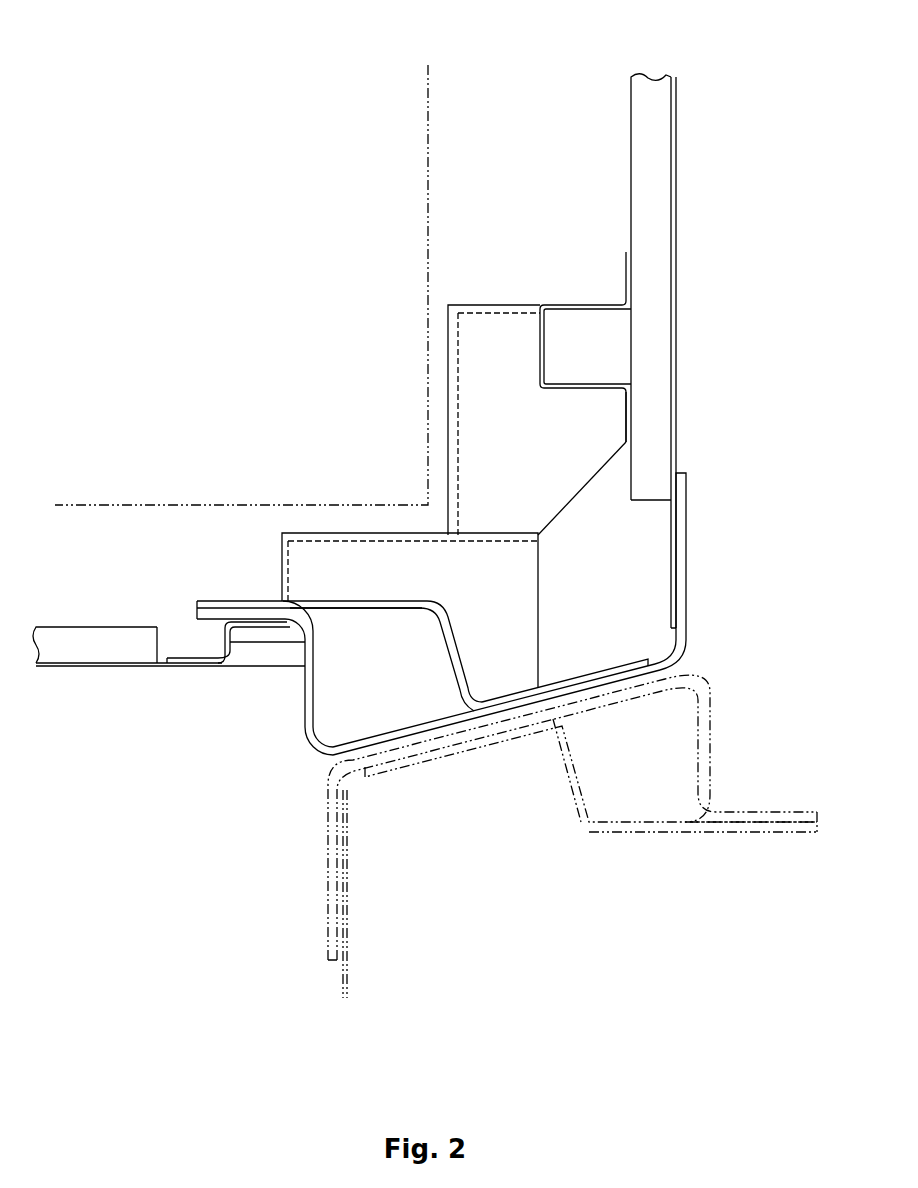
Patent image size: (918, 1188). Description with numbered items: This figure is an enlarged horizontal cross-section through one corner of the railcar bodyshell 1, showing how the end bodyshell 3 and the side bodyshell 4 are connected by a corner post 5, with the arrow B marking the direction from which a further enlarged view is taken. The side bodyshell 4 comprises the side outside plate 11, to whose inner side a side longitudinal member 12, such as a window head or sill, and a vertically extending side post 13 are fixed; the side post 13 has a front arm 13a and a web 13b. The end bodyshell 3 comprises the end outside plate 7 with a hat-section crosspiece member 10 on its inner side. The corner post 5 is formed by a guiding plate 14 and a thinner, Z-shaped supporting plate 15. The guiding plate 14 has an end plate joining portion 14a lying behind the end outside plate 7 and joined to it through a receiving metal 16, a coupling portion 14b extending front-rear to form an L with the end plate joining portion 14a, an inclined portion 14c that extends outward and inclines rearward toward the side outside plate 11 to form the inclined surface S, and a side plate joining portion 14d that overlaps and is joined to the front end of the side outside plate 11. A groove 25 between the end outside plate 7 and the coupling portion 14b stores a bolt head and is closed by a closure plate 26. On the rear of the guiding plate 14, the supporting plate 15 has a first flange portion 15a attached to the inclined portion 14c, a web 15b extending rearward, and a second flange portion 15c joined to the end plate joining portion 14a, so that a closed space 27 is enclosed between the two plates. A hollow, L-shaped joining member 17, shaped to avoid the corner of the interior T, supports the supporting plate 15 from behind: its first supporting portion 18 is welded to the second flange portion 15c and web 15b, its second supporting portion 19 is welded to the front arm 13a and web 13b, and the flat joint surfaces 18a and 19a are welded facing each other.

The bodyshell 1 is at (496, 508).
The end bodyshell 3 is at (169, 672).
The side bodyshell 4 is at (511, 540).
The corner post 5 is at (493, 716).
The end outside plate 7 is at (132, 668).
The crosspiece member 10 is at (88, 630).
The side outside plate 11 is at (678, 390).
The side longitudinal member 12 is at (663, 336).
The side post 13 is at (550, 342).
The front arm 13a is at (583, 393).
The web 13b is at (540, 348).
The guiding plate 14 is at (498, 675).
The end plate joining portion 14a is at (215, 612).
The coupling portion 14b is at (307, 690).
The inclined portion 14c is at (458, 720).
The side plate joining portion 14d is at (688, 545).
The supporting plate 15 is at (550, 730).
The first flange portion 15a is at (608, 672).
The web 15b is at (452, 648).
The second flange portion 15c is at (395, 603).
The receiving metal 16 is at (257, 623).
The joining member 17 is at (468, 496).
The first supporting portion 18 is at (449, 496).
The joint surface 18a is at (483, 533).
The second supporting portion 19 is at (546, 522).
The joint surface 19a is at (505, 542).
The groove 25 is at (250, 640).
The closure plate 26 is at (273, 660).
The closed space 27 is at (362, 690).
The inclined surface S is at (515, 717).
The interior T is at (130, 507).
The arrow B is at (542, 175).